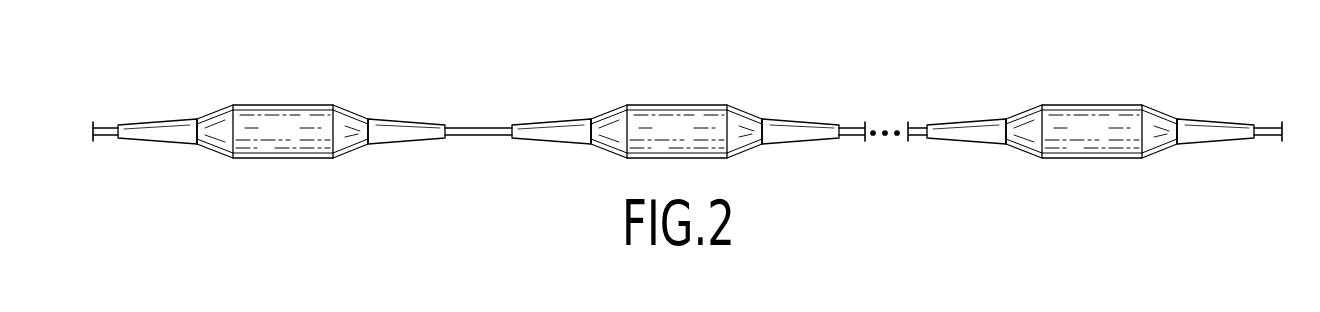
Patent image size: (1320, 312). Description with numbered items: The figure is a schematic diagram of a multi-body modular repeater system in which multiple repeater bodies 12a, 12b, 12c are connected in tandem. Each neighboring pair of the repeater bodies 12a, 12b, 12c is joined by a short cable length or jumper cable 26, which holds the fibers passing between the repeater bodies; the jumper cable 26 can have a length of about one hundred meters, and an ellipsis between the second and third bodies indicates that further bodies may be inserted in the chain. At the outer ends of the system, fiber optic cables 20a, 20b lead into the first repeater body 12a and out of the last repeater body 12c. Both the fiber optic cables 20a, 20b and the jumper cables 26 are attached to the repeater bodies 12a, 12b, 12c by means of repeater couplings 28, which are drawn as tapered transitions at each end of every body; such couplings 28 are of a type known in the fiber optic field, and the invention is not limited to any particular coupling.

The repeater body 12a is at (280, 105).
The repeater body 12b is at (677, 105).
The repeater body 12c is at (1090, 105).
The fiber optic cable 20a is at (105, 126).
The fiber optic cable 20b is at (1267, 126).
The jumper cable 26 is at (478, 127).
The repeater coupling 28 is at (158, 143).